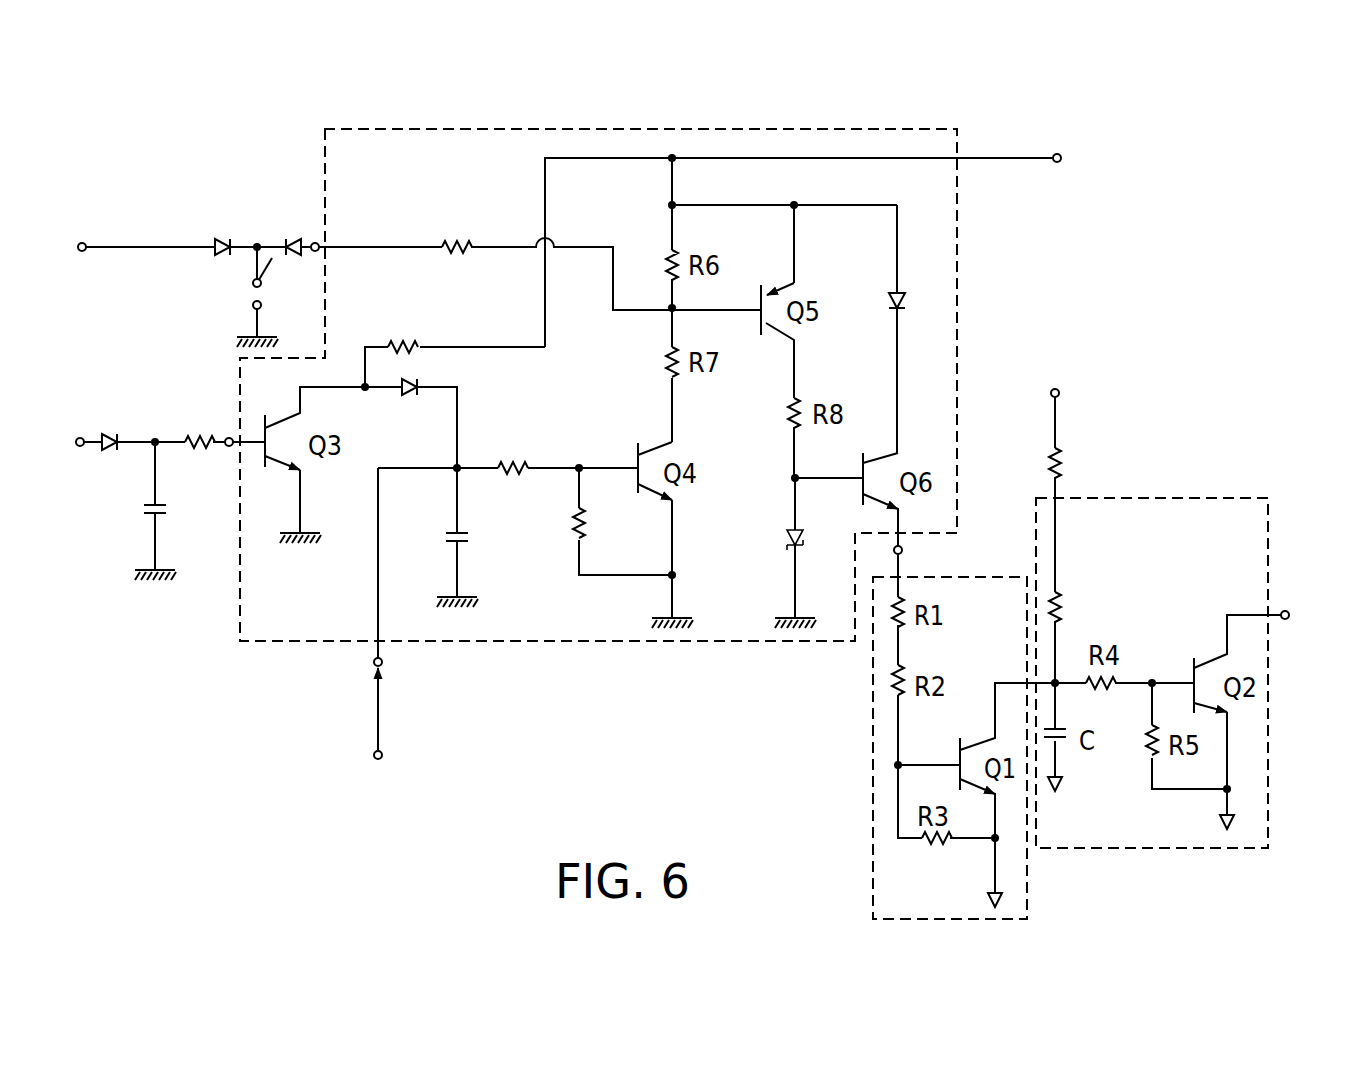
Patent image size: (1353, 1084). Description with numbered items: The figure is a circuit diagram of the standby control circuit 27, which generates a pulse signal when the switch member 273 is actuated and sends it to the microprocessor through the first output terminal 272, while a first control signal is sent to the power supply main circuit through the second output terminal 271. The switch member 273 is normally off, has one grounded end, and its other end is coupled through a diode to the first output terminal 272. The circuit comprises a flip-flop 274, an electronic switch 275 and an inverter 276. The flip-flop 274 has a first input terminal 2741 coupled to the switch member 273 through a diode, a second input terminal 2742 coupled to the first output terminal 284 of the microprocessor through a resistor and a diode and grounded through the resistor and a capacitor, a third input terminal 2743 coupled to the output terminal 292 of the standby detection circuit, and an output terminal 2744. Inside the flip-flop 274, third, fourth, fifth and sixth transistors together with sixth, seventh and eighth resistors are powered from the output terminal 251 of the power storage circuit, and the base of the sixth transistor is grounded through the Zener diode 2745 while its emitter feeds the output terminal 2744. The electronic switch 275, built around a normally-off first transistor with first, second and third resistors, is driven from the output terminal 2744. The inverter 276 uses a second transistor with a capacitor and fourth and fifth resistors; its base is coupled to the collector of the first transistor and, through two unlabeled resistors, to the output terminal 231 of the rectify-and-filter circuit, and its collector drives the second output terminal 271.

The standby control circuit 27 is at (1082, 280).
The output terminal of the power storage circuit 251 is at (1063, 157).
The output terminal of the rectify-and-filter circuit 231 is at (1060, 388).
The second output terminal 271 is at (1290, 614).
The first output terminal 272 is at (80, 243).
The switch member 273 is at (250, 290).
The flip-flop 274 is at (908, 126).
The first input terminal of the flip-flop 2741 is at (315, 243).
The second input terminal of the flip-flop 2742 is at (226, 447).
The third input terminal of the flip-flop 2743 is at (383, 661).
The output terminal of the flip-flop 2744 is at (904, 551).
The Zener diode 2745 is at (783, 543).
The electronic switch 275 is at (1027, 891).
The inverter 276 is at (1268, 788).
The first output terminal of the microprocessor 284 is at (76, 446).
The output terminal of the standby detection circuit 292 is at (383, 754).